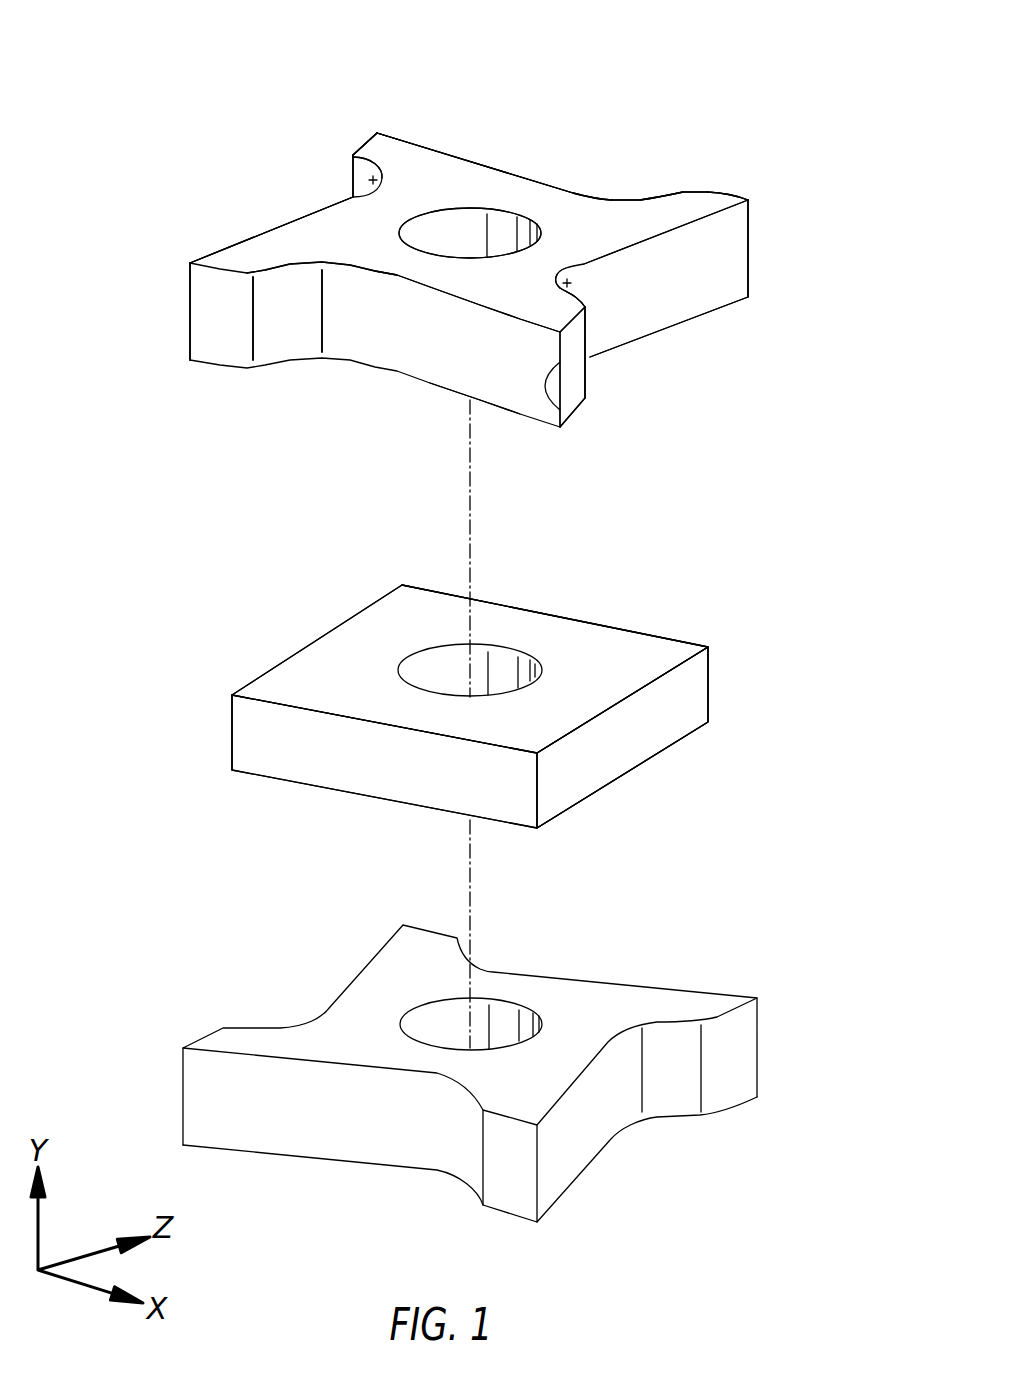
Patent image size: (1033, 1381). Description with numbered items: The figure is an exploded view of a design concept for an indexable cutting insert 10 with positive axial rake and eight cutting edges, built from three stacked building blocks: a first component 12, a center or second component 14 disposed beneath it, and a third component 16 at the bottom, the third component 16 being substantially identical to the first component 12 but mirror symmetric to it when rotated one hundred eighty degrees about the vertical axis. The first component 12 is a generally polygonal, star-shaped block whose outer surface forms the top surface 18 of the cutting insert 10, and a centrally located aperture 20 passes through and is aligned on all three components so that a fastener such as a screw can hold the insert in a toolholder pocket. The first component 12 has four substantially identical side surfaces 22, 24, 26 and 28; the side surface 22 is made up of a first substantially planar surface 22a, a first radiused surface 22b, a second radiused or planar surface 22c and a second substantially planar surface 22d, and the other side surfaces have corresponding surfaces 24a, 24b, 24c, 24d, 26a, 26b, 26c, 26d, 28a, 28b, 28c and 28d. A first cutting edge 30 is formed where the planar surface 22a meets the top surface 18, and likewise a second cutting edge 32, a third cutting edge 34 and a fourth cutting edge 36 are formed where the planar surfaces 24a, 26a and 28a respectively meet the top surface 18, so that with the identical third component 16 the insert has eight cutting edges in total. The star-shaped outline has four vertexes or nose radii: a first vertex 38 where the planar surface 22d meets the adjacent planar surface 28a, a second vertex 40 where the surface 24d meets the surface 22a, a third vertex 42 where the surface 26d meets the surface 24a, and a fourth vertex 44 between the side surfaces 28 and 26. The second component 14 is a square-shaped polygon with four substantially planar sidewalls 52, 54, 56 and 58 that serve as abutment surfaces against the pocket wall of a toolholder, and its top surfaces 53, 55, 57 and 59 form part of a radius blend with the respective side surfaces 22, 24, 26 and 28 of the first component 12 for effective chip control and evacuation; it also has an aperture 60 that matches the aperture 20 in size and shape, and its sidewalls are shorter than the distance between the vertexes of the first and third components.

The cutting insert 10 is at (100, 73).
The first component 12 is at (818, 243).
The second component 14 is at (803, 612).
The third component 16 is at (162, 1001).
The top surface 18 is at (354, 244).
The aperture 20 is at (450, 225).
The side surface 22 is at (420, 362).
The first substantially planar surface 22a is at (467, 368).
The first radiused surface 22b is at (317, 322).
The second radiused or planar surface 22c is at (272, 325).
The second substantially planar surface 22d is at (210, 330).
The side surface 24 is at (660, 304).
The first substantially planar surface 24a is at (683, 287).
The first radiused surface 24b is at (582, 293).
The second radiused or planar surface 24c is at (590, 303).
The second substantially planar surface 24d is at (572, 392).
The side surface 26 is at (582, 168).
The first substantially planar surface 26a is at (488, 163).
The first radiused surface 26b is at (612, 200).
The second radiused or planar surface 26c is at (658, 196).
The second substantially planar surface 26d is at (727, 193).
The side surface 28 is at (228, 205).
The first substantially planar surface 28a is at (223, 248).
The first radiused surface 28b is at (375, 182).
The second radiused or planar surface 28c is at (358, 167).
The second substantially planar surface 28d is at (362, 140).
The first cutting edge 30 is at (390, 273).
The second cutting edge 32 is at (670, 232).
The third cutting edge 34 is at (520, 177).
The fourth cutting edge 36 is at (297, 220).
The first vertex or nose radius 38 is at (190, 263).
The second vertex or nose radius 40 is at (566, 412).
The third vertex or nose radius 42 is at (755, 235).
The fourth vertex or nose radius 44 is at (377, 130).
The sidewall 52 is at (333, 752).
The top surface 53 is at (397, 715).
The sidewall 54 is at (590, 762).
The top surface 55 is at (635, 672).
The sidewall 56 is at (660, 637).
The top surface 57 is at (580, 637).
The sidewall 58 is at (253, 678).
The top surface 59 is at (320, 658).
The aperture 60 is at (500, 663).